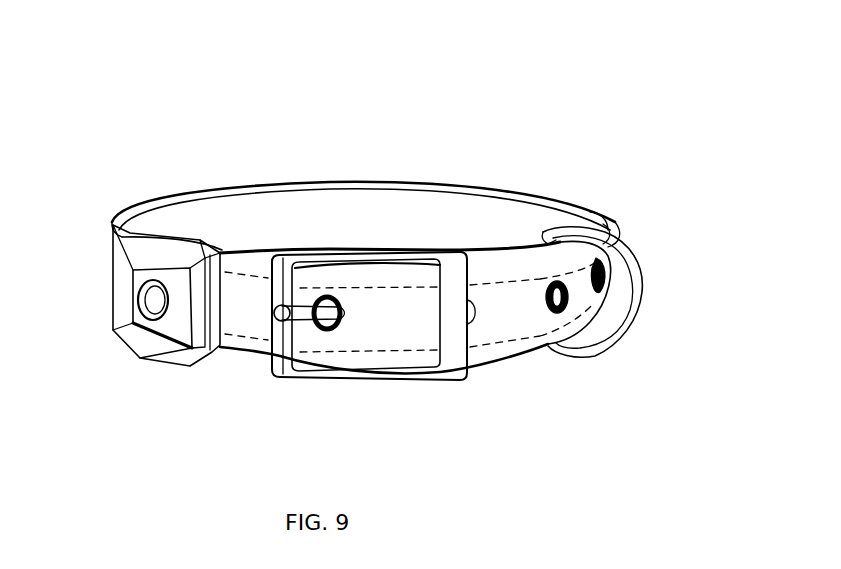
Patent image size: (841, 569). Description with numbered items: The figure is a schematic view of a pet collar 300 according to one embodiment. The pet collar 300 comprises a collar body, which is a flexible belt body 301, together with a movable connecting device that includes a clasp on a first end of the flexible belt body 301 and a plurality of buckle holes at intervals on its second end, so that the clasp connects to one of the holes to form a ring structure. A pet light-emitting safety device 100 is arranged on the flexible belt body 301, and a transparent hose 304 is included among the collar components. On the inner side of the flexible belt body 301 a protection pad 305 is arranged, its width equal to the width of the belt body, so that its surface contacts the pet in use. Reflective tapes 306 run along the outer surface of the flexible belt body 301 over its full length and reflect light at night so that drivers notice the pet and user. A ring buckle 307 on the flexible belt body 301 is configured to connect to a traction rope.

The pet collar 300 is at (376, 72).
The pet light-emitting safety device 100 is at (208, 180).
The transparent hose 304 is at (321, 180).
The protection pad 305 is at (483, 222).
The flexible belt body 301 is at (258, 295).
The reflective tapes 306 is at (514, 345).
The ring buckle 307 is at (604, 370).